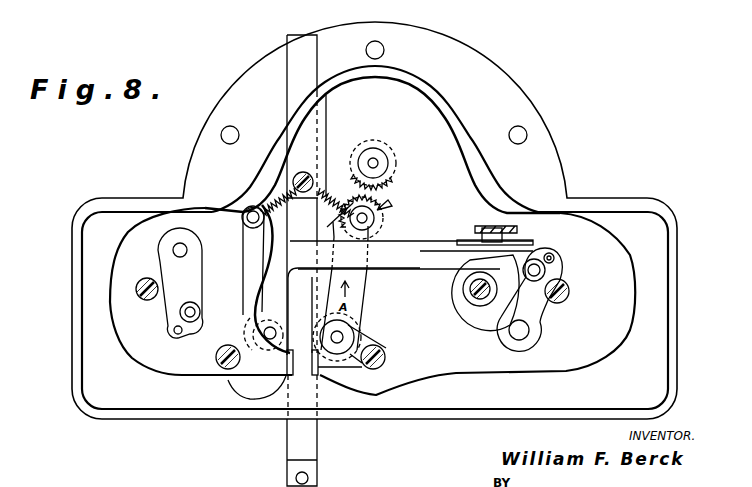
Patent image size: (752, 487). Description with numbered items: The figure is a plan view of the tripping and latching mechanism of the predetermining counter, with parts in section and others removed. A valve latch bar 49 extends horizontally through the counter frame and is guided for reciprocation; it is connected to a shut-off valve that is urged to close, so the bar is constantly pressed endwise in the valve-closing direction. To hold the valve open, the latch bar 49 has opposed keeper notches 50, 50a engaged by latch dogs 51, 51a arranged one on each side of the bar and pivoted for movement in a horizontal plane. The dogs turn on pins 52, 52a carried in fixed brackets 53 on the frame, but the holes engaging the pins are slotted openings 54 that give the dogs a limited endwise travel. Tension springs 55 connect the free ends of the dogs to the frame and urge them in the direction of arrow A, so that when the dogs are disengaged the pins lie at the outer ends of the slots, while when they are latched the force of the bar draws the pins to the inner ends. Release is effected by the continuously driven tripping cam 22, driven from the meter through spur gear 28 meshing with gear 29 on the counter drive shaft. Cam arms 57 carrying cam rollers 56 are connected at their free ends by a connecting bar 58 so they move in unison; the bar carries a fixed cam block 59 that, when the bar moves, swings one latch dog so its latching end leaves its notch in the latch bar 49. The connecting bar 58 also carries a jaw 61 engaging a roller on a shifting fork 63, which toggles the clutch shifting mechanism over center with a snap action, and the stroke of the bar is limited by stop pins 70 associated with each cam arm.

The tripping cam 22 is at (464, 320).
The spur gear 28 is at (394, 203).
The gear 29 is at (396, 147).
The valve latch bar 49 is at (306, 55).
The keeper notch 50 is at (283, 378).
The keeper notch 50a is at (318, 373).
The latch dog 51 is at (248, 276).
The latch dog 51a is at (361, 290).
The pin 52 is at (257, 363).
The pin 52a is at (343, 336).
The bracket 53 is at (232, 371).
The slotted opening 54 is at (253, 313).
The tension spring 55 is at (270, 185).
The cam roller 56 is at (193, 340).
The cam arm 57 is at (195, 275).
The connecting bar 58 is at (416, 240).
The cam block 59 is at (388, 195).
The jaw 61 is at (524, 238).
The shifting fork 63 is at (493, 230).
The stop pin 70 is at (145, 297).